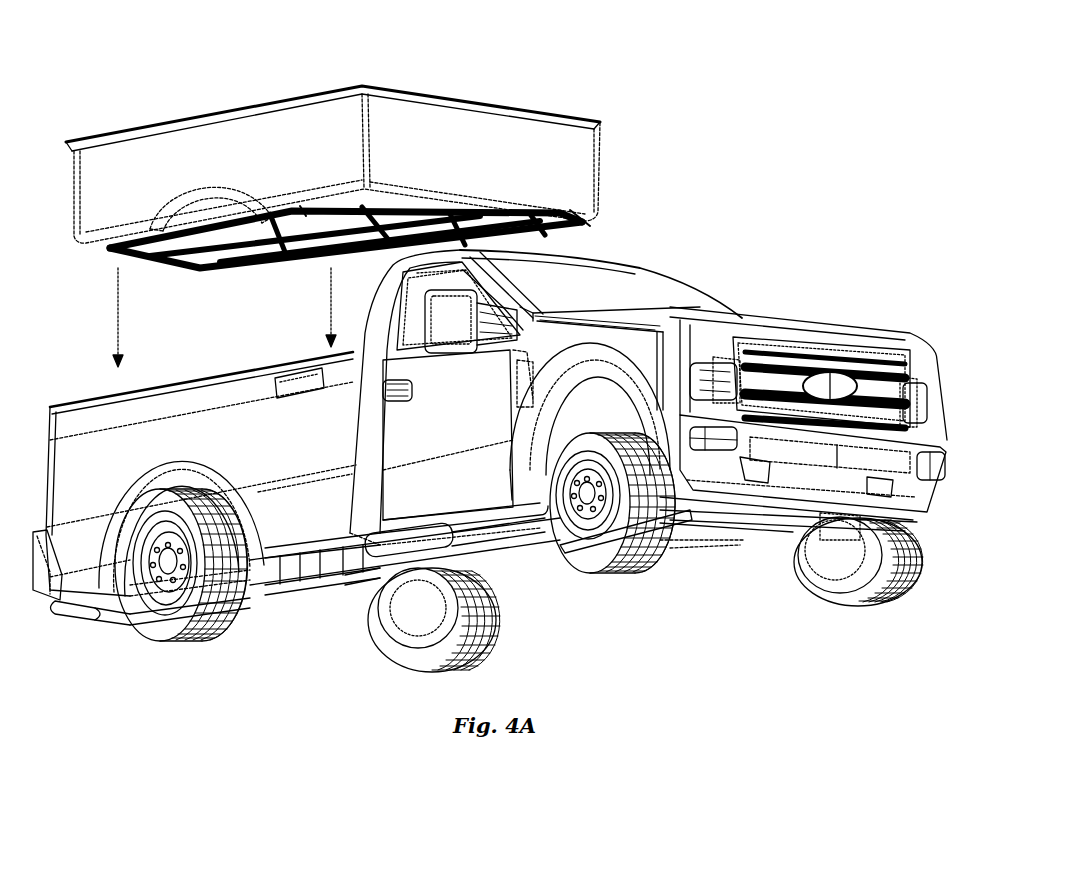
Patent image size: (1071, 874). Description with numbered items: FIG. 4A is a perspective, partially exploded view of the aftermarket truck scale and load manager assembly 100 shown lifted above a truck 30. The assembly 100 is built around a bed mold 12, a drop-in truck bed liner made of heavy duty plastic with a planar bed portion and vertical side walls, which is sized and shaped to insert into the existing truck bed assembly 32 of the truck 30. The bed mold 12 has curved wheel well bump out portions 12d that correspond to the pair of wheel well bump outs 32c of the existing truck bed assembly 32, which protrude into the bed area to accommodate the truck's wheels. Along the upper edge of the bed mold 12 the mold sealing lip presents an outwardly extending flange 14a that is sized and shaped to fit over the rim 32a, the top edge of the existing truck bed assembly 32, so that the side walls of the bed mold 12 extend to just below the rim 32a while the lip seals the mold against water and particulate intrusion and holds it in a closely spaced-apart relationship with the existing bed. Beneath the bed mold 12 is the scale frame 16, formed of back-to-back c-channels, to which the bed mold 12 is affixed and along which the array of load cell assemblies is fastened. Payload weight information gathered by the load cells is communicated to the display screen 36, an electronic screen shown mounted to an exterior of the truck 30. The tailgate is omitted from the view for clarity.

The aftermarket truck scale and load manager assembly 100 is at (641, 78).
The bed mold 12 is at (577, 138).
The wheel well bump out portions 12d is at (186, 205).
The flange 14a is at (228, 110).
The scale frame 16 is at (237, 281).
The truck 30 is at (717, 277).
The existing truck bed assembly 32 is at (178, 375).
The rim 32a is at (122, 397).
The wheel well bump outs 32c is at (131, 493).
The display screen 36 is at (314, 387).